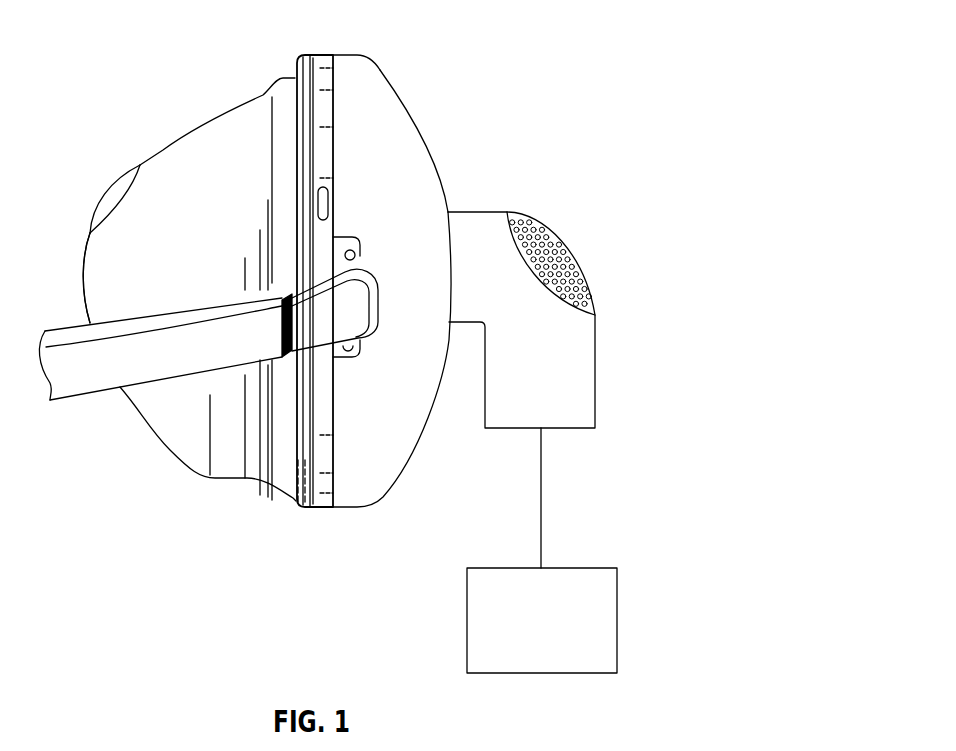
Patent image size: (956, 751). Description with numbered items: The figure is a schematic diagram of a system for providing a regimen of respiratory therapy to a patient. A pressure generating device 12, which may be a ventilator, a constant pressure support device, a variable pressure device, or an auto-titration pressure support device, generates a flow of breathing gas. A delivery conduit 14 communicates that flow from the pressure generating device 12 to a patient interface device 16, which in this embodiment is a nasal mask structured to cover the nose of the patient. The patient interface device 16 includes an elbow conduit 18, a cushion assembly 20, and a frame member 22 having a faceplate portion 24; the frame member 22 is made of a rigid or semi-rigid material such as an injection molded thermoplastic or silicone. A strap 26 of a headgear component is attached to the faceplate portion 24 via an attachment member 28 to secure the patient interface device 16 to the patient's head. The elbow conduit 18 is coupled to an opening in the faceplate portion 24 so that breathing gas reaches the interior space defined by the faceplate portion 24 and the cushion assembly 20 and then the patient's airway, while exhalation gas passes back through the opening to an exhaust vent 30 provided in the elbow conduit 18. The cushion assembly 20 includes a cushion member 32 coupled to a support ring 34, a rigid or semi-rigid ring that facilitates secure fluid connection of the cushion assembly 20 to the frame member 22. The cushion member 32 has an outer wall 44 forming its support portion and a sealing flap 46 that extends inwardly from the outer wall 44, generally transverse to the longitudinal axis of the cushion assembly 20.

The pressure generating device 12 is at (617, 627).
The delivery conduit 14 is at (542, 503).
The patient interface device 16 is at (444, 114).
The elbow conduit 18 is at (598, 372).
The cushion assembly 20 is at (243, 97).
The frame member 22 is at (373, 64).
The faceplate portion 24 is at (432, 190).
The strap 26 is at (140, 360).
The attachment member 28 is at (363, 244).
The exhaust vent 30 is at (558, 240).
The cushion member 32 is at (205, 143).
The support ring 34 is at (325, 500).
The outer wall 44 is at (212, 479).
The sealing flap 46 is at (98, 265).